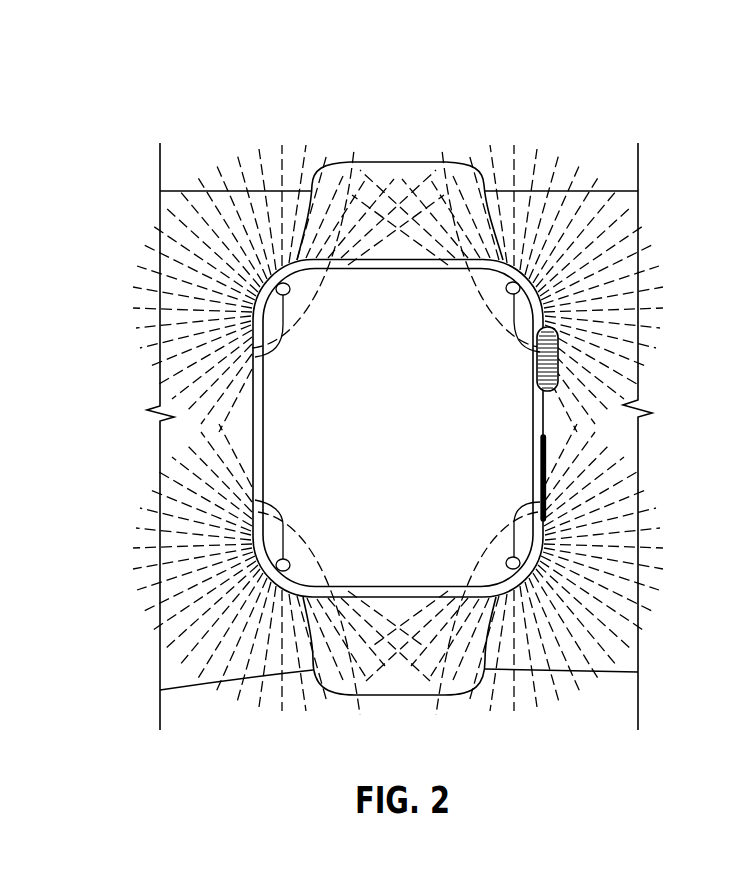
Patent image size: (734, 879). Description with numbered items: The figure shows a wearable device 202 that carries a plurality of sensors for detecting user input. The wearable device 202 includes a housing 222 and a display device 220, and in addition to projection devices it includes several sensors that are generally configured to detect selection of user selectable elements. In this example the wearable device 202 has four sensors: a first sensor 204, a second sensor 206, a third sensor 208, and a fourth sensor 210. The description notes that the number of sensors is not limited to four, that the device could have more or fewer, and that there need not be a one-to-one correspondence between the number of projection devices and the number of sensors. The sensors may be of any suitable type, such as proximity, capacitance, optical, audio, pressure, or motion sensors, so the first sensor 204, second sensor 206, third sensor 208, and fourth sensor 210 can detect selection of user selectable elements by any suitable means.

The wearable device 202 is at (375, 128).
The first sensor 204 is at (545, 358).
The second sensor 206 is at (548, 503).
The third sensor 208 is at (255, 500).
The fourth sensor 210 is at (255, 357).
The display device 220 is at (465, 293).
The housing 222 is at (545, 422).